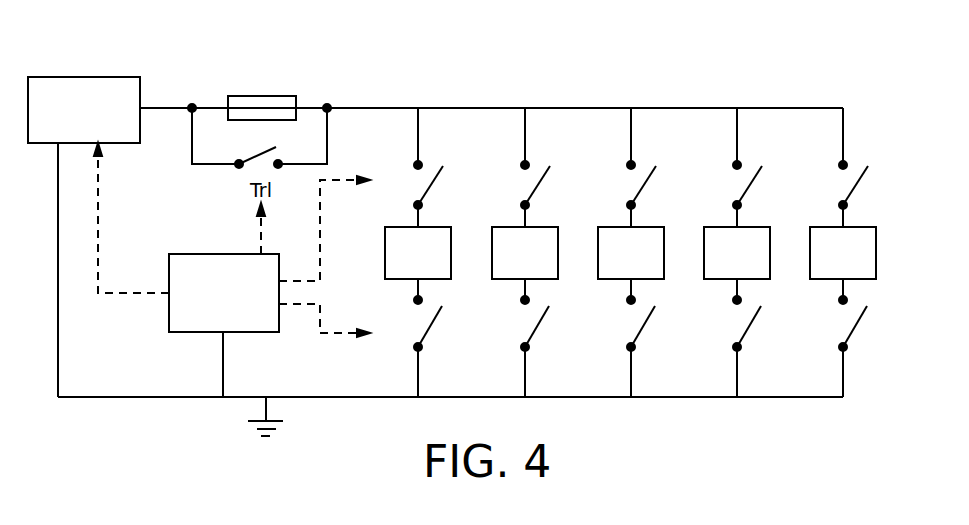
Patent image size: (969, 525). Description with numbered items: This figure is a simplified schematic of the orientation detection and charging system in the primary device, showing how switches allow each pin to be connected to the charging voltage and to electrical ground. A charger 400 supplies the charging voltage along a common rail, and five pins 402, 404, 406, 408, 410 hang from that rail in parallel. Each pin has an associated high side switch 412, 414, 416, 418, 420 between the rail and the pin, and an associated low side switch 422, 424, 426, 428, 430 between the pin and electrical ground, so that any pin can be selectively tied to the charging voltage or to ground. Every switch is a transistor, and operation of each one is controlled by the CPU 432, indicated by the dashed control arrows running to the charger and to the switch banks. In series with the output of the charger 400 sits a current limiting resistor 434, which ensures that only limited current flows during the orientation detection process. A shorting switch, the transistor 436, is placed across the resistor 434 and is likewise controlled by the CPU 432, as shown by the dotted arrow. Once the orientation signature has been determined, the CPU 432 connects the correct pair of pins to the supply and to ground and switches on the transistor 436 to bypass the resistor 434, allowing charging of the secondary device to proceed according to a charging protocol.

The charger 400 is at (85, 75).
The pin 402 is at (418, 253).
The pin 404 is at (525, 253).
The pin 406 is at (631, 253).
The pin 408 is at (737, 253).
The pin 410 is at (843, 253).
The high side switch 412 is at (431, 163).
The high side switch 414 is at (538, 163).
The high side switch 416 is at (644, 163).
The high side switch 418 is at (750, 163).
The high side switch 420 is at (856, 163).
The low side switch 422 is at (420, 323).
The low side switch 424 is at (527, 323).
The low side switch 426 is at (633, 323).
The low side switch 428 is at (739, 323).
The low side switch 430 is at (847, 323).
The CPU 432 is at (168, 318).
The current limiting resistor 434 is at (262, 95).
The transistor 436 is at (252, 170).